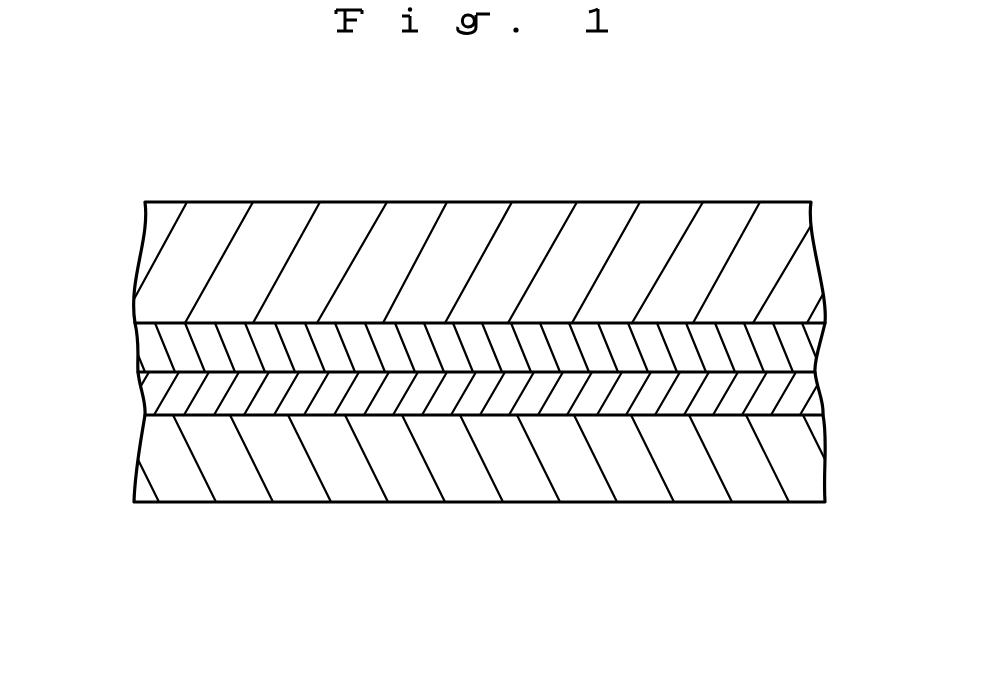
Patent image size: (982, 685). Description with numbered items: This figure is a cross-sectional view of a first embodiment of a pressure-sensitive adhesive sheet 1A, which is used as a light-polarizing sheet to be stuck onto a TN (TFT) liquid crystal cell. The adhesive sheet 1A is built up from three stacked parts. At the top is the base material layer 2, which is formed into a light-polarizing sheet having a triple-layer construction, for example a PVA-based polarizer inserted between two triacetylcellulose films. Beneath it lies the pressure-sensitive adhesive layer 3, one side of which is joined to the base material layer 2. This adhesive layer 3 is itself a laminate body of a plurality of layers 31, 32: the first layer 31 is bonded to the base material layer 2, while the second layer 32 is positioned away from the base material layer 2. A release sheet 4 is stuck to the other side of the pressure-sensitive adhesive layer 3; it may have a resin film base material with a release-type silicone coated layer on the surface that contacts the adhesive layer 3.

The adhesive sheet 1A is at (733, 165).
The base material layer 2 is at (777, 250).
The pressure-sensitive adhesive layer 3 is at (477, 369).
The layer (first layer) 31 is at (180, 349).
The layer (second layer) 32 is at (438, 398).
The release sheet 4 is at (786, 462).